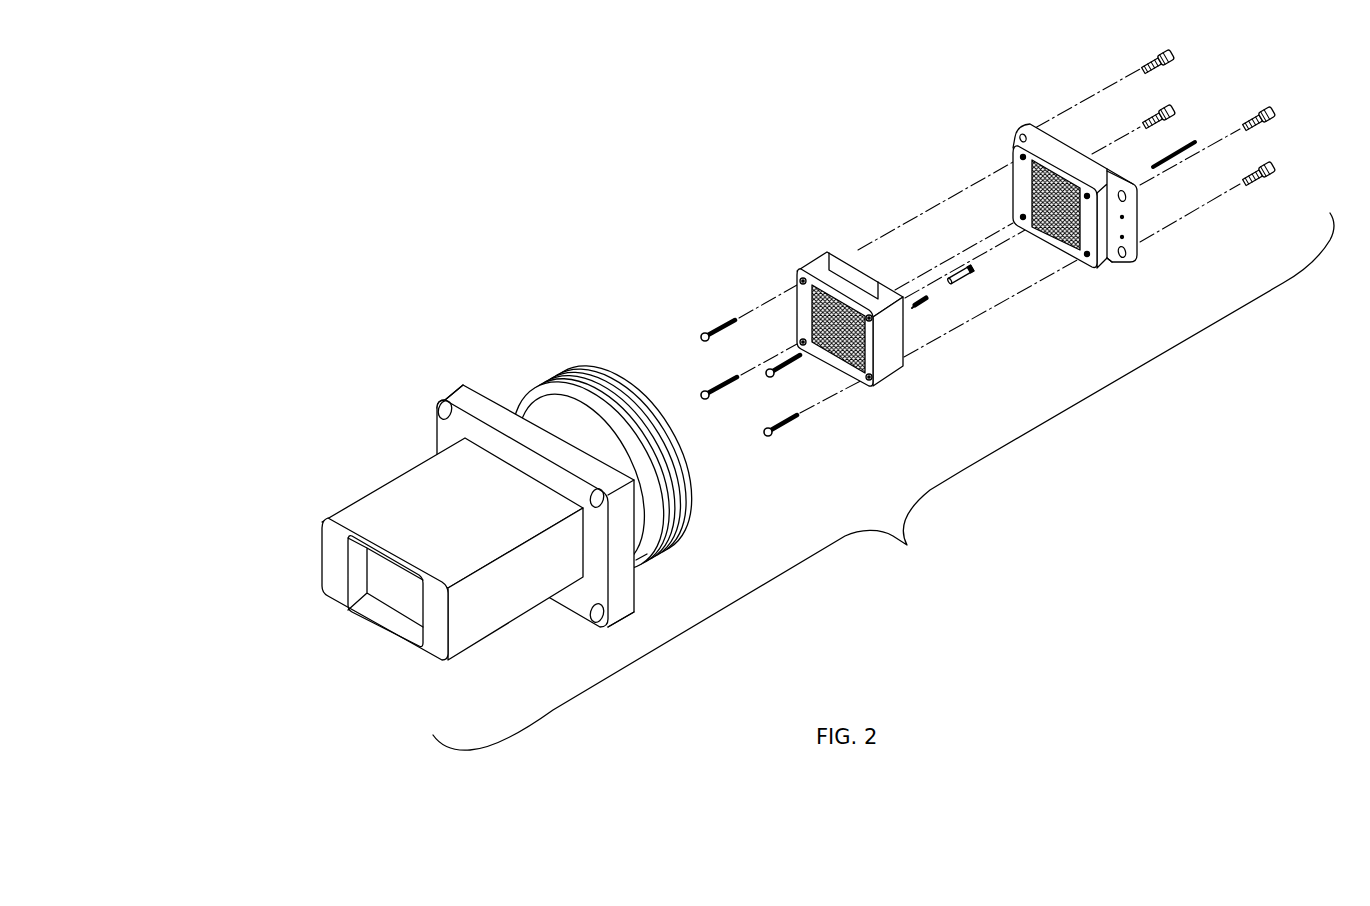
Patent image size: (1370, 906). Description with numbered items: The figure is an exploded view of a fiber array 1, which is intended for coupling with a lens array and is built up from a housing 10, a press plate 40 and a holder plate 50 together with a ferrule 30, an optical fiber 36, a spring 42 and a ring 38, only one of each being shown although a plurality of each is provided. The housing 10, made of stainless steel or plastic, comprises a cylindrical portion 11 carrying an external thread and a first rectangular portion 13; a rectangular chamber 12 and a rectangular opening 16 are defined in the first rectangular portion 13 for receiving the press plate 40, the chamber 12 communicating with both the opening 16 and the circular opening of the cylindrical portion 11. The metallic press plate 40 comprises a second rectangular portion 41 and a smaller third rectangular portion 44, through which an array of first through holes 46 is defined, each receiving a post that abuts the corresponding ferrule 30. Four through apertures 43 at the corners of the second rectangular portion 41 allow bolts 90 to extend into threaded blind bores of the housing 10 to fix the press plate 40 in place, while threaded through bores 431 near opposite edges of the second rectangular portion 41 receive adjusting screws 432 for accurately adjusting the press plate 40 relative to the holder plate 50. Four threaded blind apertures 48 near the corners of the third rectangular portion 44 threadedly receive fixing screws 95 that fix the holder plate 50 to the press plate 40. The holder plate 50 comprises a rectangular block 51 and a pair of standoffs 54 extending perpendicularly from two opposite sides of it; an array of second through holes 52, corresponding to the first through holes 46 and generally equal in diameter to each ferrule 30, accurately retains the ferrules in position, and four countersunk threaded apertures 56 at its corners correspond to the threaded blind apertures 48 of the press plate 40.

The fiber array 1 is at (600, 123).
The housing 10 is at (412, 433).
The cylindrical portion 11 is at (588, 370).
The rectangular chamber 12 is at (402, 598).
The first rectangular portion 13 is at (382, 510).
The rectangular opening 16 is at (373, 613).
The ferrule 30 is at (958, 290).
The optical fiber 36 is at (1018, 243).
The ring 38 is at (973, 273).
The press plate 40 is at (1019, 114).
The second rectangular portion 41 is at (1017, 133).
The spring 42 is at (920, 308).
The through aperture 43 is at (1168, 149).
The third rectangular portion 44 is at (1107, 254).
The first through hole 46 is at (1050, 167).
The threaded blind aperture 48 is at (1021, 158).
The holder plate 50 is at (803, 259).
The rectangular block 51 is at (868, 352).
The second through hole 52 is at (810, 318).
The standoff 54 is at (890, 299).
The countersunk threaded aperture 56 is at (799, 280).
The bolt 90 is at (1270, 180).
The fixing screw 95 is at (782, 425).
The threaded through bore 431 is at (1127, 250).
The adjusting screw 432 is at (1140, 228).